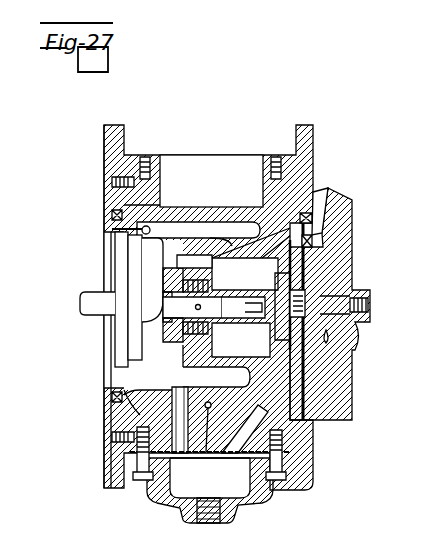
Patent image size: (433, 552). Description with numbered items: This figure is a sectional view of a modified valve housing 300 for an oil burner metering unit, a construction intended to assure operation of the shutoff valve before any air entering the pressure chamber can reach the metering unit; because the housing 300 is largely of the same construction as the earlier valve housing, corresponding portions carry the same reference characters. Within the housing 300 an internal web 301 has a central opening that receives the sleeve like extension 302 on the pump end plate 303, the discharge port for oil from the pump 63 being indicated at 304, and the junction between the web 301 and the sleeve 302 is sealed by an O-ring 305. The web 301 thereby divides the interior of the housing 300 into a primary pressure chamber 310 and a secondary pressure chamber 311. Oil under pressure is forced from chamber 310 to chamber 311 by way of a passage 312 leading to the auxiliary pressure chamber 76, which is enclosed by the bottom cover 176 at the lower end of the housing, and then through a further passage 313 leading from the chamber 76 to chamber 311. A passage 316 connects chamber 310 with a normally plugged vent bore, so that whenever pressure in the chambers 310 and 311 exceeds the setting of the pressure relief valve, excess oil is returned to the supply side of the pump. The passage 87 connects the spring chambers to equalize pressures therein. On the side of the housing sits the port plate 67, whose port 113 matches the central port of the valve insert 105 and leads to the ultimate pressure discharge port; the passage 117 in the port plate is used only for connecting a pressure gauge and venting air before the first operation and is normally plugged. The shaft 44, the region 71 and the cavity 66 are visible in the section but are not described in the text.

The valve housing 300 is at (170, 292).
The internal web 301 is at (230, 242).
The cavity 71 is at (248, 165).
The passage 117 is at (325, 192).
The port plate 67 is at (339, 309).
The port 113 is at (330, 297).
The valve insert 105 is at (352, 346).
The secondary pressure chamber 311 is at (140, 212).
The passage 316 is at (146, 237).
The discharge port 304 is at (143, 245).
The shaft 44 is at (84, 303).
The pump 63 is at (123, 328).
The pump end plate 303 is at (140, 340).
The sleeve like extension 302 is at (150, 362).
The primary pressure chamber 310 is at (122, 410).
The O-ring 305 is at (181, 372).
The nut cavity 66 is at (251, 292).
The passage 313 is at (257, 410).
The passage 87 is at (210, 471).
The passage 312 is at (163, 490).
The auxiliary pressure chamber 76 is at (232, 490).
The bottom cover 176 is at (262, 494).